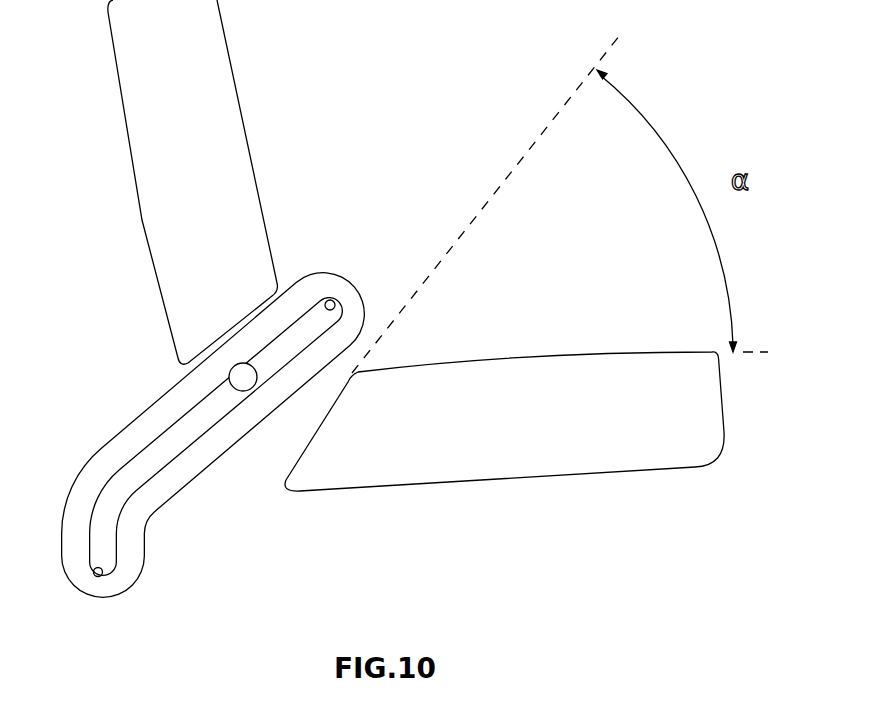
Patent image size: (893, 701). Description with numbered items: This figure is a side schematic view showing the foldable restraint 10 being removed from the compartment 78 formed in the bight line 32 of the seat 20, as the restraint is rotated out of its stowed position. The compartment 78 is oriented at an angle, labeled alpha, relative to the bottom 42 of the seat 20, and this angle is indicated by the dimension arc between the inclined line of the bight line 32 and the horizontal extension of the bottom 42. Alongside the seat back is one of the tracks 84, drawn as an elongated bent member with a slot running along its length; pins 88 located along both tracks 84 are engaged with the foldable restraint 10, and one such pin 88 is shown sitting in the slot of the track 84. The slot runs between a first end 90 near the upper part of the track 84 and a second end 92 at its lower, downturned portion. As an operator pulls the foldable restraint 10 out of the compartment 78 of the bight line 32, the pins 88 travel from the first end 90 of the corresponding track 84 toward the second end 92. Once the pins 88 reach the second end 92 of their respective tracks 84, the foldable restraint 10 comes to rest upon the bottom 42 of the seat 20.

The foldable restraint 10 is at (243, 466).
The seat 20 is at (544, 399).
The bight line 32 is at (388, 350).
The bottom 42 is at (628, 352).
The compartment 78 is at (297, 425).
The track 84 is at (153, 433).
The pin 88 is at (240, 378).
The first end 90 is at (336, 310).
The second end 92 is at (96, 578).